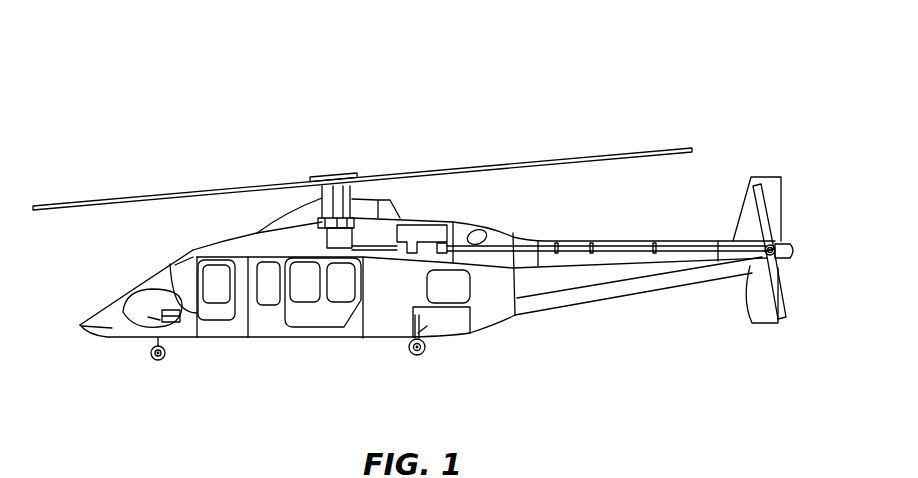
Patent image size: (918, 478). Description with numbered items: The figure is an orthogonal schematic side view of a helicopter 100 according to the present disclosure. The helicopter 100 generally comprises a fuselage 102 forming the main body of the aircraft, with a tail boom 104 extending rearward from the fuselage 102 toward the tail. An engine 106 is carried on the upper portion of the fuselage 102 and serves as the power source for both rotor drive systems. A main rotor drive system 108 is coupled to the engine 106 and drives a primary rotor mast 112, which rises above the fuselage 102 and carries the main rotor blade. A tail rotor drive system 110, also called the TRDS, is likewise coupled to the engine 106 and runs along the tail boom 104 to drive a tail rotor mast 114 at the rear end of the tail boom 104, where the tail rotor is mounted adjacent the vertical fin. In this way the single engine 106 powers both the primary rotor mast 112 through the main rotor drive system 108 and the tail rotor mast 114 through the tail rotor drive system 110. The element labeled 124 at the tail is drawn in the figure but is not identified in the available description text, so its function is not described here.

The helicopter 100 is at (720, 100).
The fuselage 102 is at (208, 243).
The tail boom 104 is at (596, 303).
The engine 106 is at (423, 225).
The main rotor drive system 108 is at (375, 232).
The tail rotor drive system 110 is at (620, 240).
The primary rotor mast 112 is at (290, 186).
The tail rotor mast 114 is at (782, 238).
The vertical fin 124 is at (754, 305).